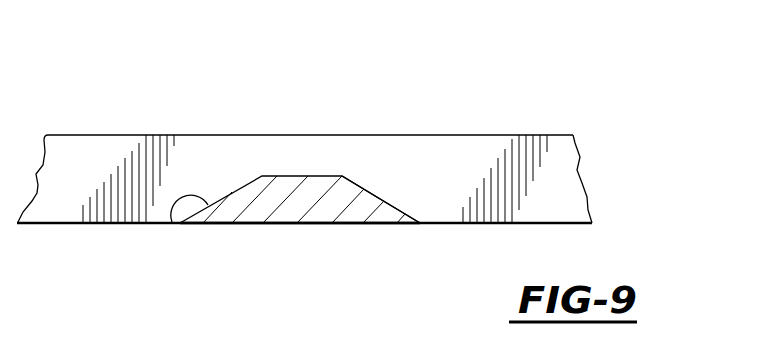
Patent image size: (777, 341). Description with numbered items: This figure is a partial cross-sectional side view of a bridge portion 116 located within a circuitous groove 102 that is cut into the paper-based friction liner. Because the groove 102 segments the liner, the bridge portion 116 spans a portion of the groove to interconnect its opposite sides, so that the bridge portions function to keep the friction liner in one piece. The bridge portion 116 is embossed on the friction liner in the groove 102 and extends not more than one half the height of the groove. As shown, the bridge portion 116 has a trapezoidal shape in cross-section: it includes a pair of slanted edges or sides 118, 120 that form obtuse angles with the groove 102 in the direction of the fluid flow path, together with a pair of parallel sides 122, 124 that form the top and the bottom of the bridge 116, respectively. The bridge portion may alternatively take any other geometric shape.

The circuitous groove 102 is at (520, 128).
The bridge portion 116 is at (379, 163).
The slanted side 118 is at (172, 222).
The slanted side 120 is at (396, 209).
The top side 122 is at (282, 176).
The bottom side 124 is at (333, 223).